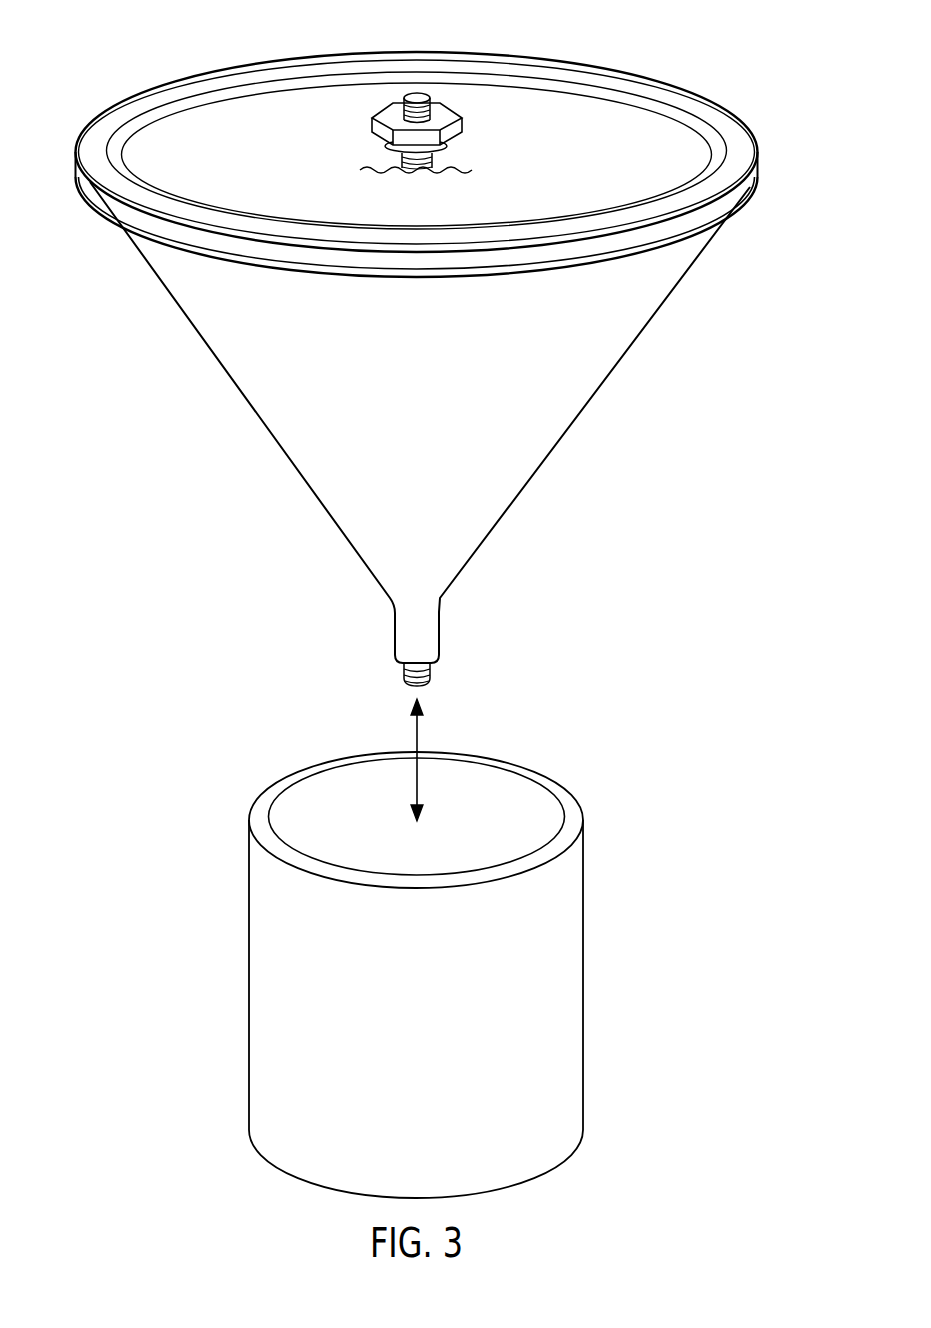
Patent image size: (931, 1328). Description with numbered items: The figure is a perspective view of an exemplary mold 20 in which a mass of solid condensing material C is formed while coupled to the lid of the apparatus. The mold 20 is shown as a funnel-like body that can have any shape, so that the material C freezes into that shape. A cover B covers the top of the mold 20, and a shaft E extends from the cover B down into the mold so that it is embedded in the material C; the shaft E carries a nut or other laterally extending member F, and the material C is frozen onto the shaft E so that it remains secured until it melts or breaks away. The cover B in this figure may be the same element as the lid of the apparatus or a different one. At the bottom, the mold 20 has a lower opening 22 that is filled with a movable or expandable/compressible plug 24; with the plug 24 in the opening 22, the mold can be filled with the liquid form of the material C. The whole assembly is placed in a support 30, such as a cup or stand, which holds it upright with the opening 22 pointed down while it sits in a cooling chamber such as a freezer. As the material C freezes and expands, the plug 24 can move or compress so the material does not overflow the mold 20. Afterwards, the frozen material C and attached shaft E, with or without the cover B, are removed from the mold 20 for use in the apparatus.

The mold 20 is at (425, 353).
The lower opening 22 is at (440, 654).
The plug 24 is at (404, 677).
The support 30 is at (585, 970).
The cover B is at (753, 150).
The condensing material C is at (193, 130).
The shaft E is at (407, 93).
The laterally extending member F is at (417, 124).
The washer G is at (416, 147).